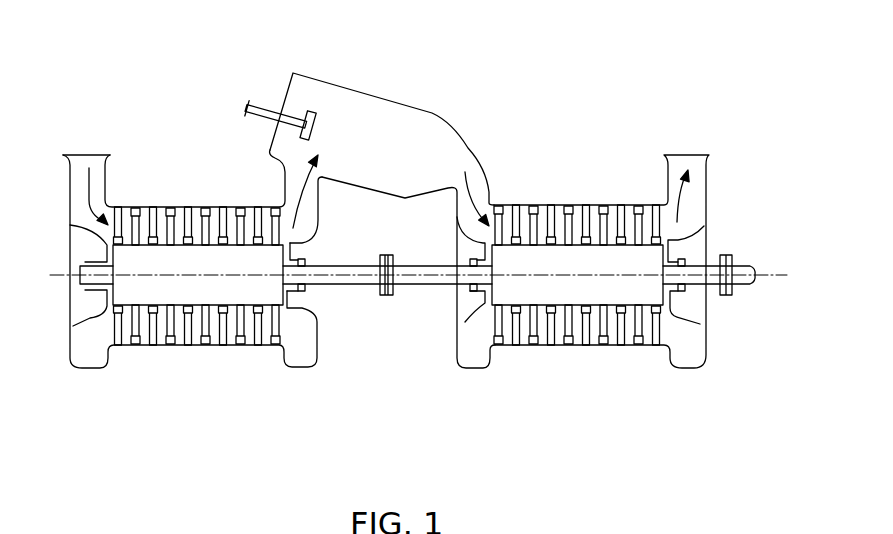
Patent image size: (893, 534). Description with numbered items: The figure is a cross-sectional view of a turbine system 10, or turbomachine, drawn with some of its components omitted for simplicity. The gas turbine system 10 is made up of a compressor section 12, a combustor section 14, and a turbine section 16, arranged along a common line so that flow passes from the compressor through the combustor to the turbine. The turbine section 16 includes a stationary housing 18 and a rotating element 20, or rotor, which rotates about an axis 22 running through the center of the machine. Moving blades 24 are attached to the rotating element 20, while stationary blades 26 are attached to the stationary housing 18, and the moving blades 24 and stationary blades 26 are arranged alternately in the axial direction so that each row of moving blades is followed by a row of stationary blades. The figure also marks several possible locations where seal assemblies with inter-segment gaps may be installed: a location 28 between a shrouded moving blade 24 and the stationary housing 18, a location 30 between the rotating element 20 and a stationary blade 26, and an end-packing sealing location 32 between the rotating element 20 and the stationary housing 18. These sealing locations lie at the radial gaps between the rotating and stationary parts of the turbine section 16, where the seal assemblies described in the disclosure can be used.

The turbine system 10 is at (462, 108).
The compressor section 12 is at (320, 387).
The combustor section 14 is at (475, 73).
The turbine section 16 is at (708, 412).
The stationary housing 18 is at (638, 205).
The rotating element 20 is at (714, 262).
The axis 22 is at (768, 273).
The moving blades 24 is at (603, 205).
The stationary blades 26 is at (622, 345).
The location 28 is at (568, 345).
The location 30 is at (477, 300).
The end-packing sealing location 32 is at (303, 292).